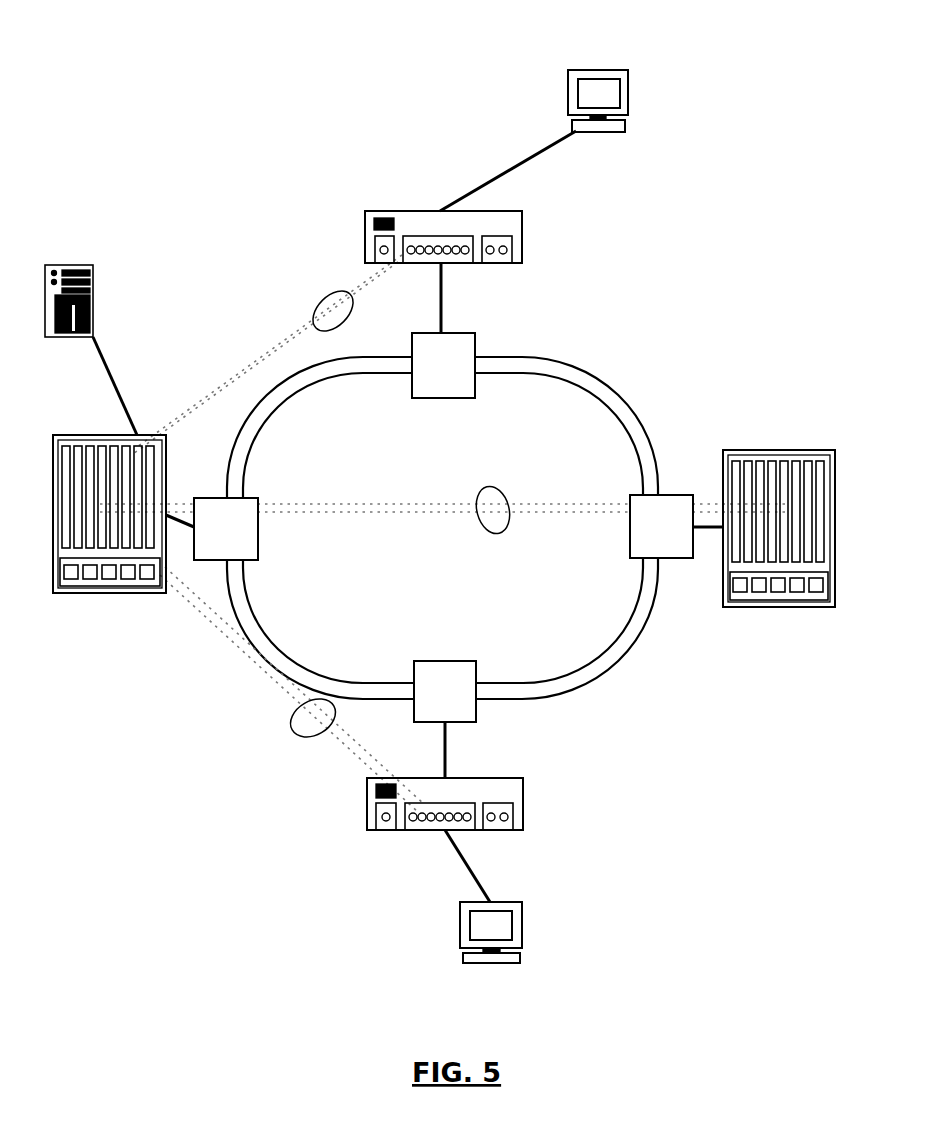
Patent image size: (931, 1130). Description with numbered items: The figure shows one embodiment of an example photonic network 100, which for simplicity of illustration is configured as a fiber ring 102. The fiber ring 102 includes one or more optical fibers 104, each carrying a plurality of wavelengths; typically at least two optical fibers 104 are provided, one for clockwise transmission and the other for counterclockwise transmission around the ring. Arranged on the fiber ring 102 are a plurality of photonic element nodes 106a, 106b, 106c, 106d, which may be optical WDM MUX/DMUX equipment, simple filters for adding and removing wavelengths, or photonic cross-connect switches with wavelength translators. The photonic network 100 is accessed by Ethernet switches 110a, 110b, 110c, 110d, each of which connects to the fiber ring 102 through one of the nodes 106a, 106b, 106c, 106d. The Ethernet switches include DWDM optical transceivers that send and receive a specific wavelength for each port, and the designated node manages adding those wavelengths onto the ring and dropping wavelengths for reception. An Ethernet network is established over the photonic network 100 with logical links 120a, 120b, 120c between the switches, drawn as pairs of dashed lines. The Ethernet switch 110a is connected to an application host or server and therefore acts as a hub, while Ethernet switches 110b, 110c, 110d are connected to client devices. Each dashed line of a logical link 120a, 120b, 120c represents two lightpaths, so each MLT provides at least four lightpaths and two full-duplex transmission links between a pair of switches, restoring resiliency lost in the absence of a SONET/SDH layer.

The photonic network 100 is at (245, 28).
The fiber ring 102 is at (562, 338).
The optical fibers 104 is at (297, 394).
The node 106a is at (205, 497).
The node 106b is at (455, 722).
The node 106c is at (676, 560).
The node 106d is at (458, 333).
The Ethernet switch 110a is at (60, 432).
The Ethernet switch 110b is at (512, 830).
The Ethernet switch 110c is at (765, 449).
The Ethernet switch 110d is at (408, 210).
The logical link 120a is at (312, 302).
The logical link 120b is at (293, 728).
The logical link 120c is at (505, 533).